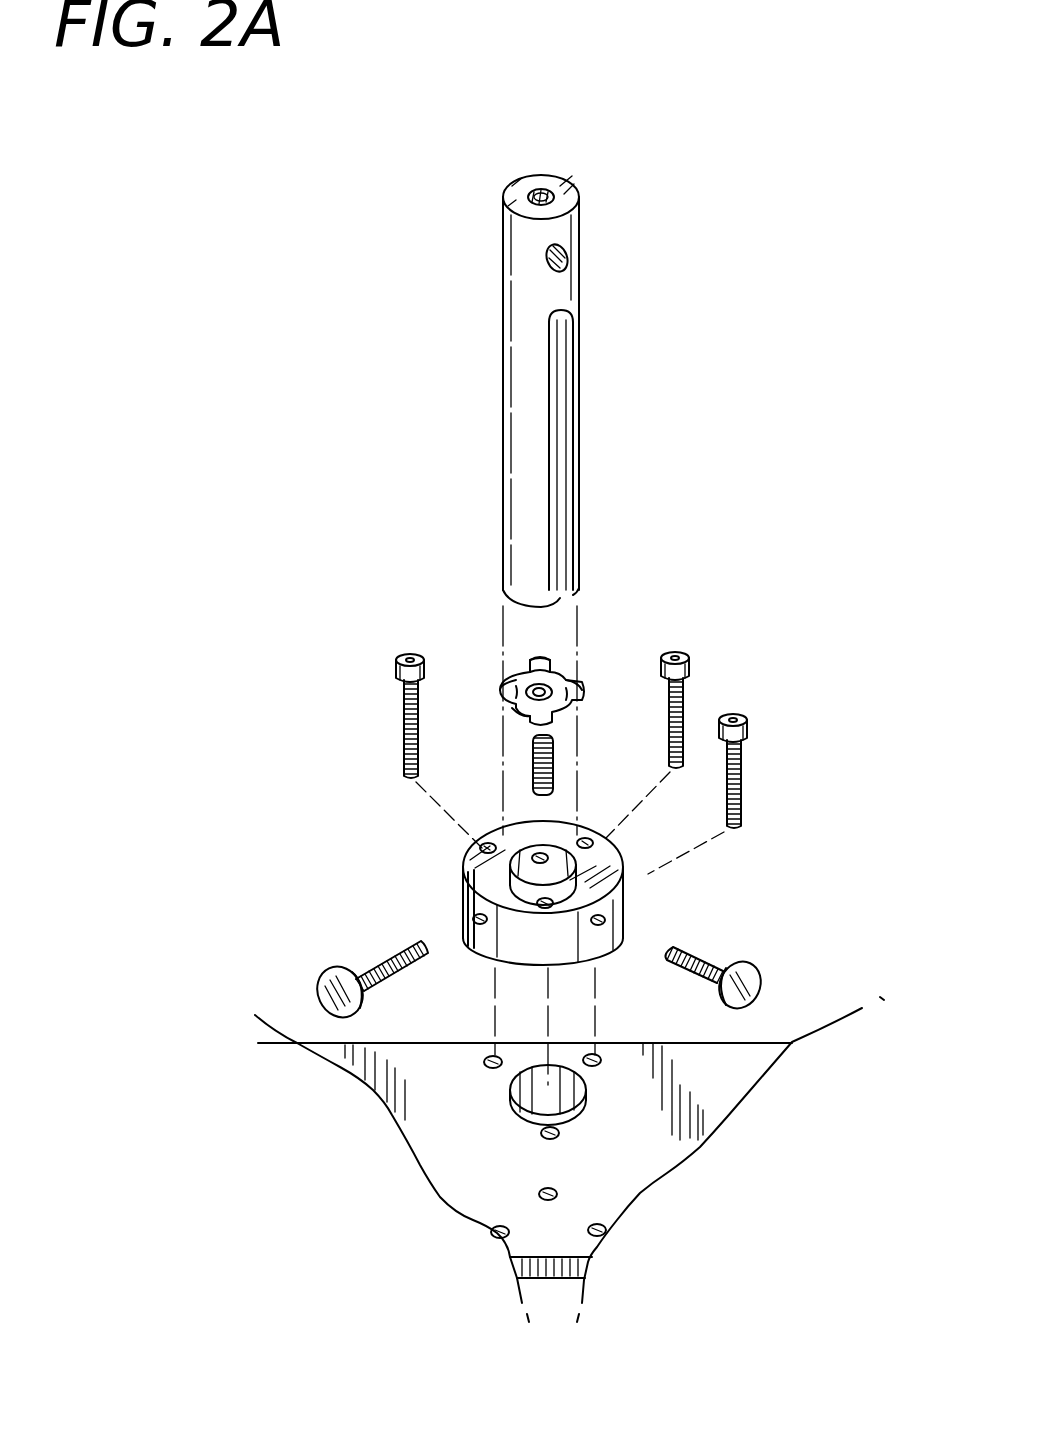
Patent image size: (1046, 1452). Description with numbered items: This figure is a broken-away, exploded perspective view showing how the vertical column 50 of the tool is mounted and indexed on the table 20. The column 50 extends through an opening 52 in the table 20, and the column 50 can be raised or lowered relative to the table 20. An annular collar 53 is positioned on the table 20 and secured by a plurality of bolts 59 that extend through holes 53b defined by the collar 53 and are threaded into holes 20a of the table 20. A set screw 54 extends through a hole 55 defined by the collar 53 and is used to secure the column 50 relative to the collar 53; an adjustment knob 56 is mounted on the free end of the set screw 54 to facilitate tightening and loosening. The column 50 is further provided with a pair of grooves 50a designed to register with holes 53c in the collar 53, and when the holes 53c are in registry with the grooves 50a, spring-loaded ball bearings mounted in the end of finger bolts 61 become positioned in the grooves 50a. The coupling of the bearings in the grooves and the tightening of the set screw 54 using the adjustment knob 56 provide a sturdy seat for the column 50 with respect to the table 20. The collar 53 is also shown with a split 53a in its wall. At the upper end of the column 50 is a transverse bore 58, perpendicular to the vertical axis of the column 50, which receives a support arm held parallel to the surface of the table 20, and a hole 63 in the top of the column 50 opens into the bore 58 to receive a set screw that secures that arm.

The table 20 is at (705, 1103).
The holes of the table 20a is at (486, 1068).
The vertical column 50 is at (568, 300).
The grooves 50a is at (570, 560).
The opening 52 is at (578, 1112).
The annular collar 53 is at (625, 888).
The split in collar 53a is at (470, 878).
The holes of the collar 53b is at (480, 846).
The holes in the collar 53c is at (468, 944).
The set screw 54 is at (556, 758).
The hole 55 is at (545, 856).
The adjustment knob 56 is at (562, 690).
The transverse bore 58 is at (565, 256).
The bolts 59 is at (400, 712).
The finger bolts 61 is at (370, 970).
The hole in the top of the column 63 is at (543, 192).